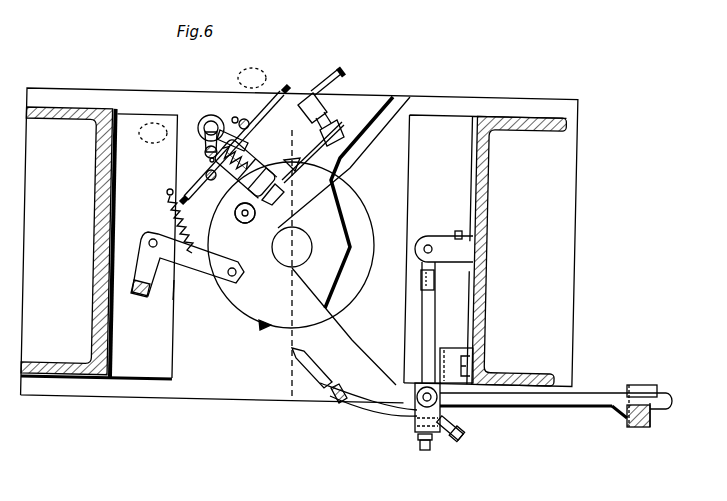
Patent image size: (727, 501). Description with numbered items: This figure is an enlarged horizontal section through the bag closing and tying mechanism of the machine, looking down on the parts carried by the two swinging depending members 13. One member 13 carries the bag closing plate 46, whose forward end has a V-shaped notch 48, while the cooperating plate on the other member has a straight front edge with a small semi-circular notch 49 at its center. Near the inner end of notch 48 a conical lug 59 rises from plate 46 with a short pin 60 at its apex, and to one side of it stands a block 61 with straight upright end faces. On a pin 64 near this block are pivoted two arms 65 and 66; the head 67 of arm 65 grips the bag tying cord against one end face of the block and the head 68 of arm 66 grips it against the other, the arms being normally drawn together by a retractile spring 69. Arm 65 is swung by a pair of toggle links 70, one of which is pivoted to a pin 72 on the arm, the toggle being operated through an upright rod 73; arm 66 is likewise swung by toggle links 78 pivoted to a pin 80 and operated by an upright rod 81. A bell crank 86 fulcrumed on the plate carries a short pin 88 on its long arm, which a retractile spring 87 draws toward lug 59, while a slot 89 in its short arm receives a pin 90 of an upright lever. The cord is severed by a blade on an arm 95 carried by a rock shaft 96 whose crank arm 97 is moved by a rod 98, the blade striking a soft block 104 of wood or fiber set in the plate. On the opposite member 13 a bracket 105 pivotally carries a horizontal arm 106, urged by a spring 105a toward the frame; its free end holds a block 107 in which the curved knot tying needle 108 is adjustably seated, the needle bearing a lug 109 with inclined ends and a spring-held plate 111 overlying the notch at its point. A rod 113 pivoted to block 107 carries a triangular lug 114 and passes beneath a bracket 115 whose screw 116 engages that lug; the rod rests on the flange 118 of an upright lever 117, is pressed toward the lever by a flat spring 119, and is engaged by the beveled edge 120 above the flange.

The depending member 13 is at (492, 200).
The bag closing plate 46 is at (299, 247).
The V-shaped notch 48 is at (366, 152).
The semi-circular notch 49 is at (312, 240).
The lug 59 is at (249, 223).
The pin 60 is at (244, 218).
The block 61 is at (292, 180).
The pin 64 is at (210, 120).
The arm 65 is at (208, 161).
The arm 66 is at (250, 148).
The head 67 is at (238, 220).
The head 68 is at (270, 168).
The retractile spring 69 is at (268, 158).
The toggle links 70 is at (206, 122).
The pin 72 is at (204, 150).
The upright rod 73 is at (234, 117).
The toggle links 78 is at (192, 198).
The pin 80 is at (247, 118).
The upright rod 81 is at (205, 177).
The bell crank 86 is at (210, 268).
The retractile spring 87 is at (174, 223).
The pin 88 is at (236, 277).
The slot 89 is at (173, 312).
The pin 90 is at (144, 298).
The arm 95 is at (312, 158).
The rock shaft 96 is at (338, 125).
The crank arm 97 is at (312, 92).
The rod 98 is at (330, 84).
The block 104 is at (270, 203).
The bracket 105 is at (436, 234).
The spring 105a is at (462, 235).
The arm 106 is at (428, 320).
The block 107 is at (420, 432).
The knot tying needle 108 is at (378, 414).
The lug 109 is at (328, 404).
The spring-held plate 111 is at (308, 375).
The rod 113 is at (535, 407).
The triangular lug 114 is at (624, 414).
The bracket 115 is at (452, 350).
The screw 116 is at (442, 442).
The upright lever 117 is at (633, 430).
The flange 118 is at (627, 388).
The flat spring 119 is at (667, 392).
The beveled edge 120 is at (655, 418).